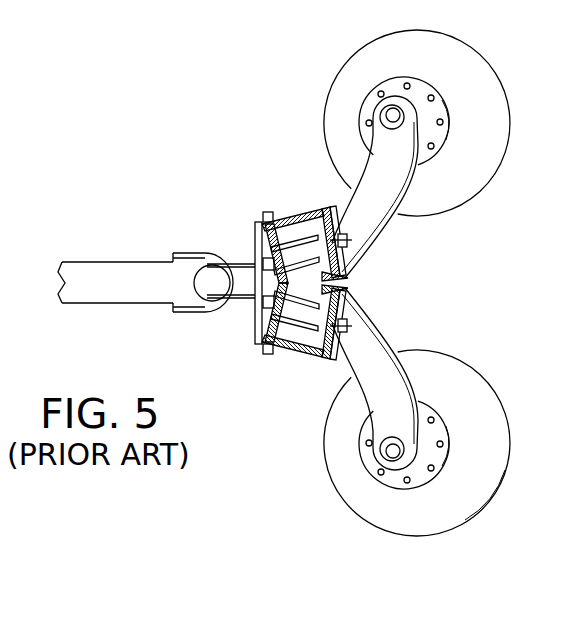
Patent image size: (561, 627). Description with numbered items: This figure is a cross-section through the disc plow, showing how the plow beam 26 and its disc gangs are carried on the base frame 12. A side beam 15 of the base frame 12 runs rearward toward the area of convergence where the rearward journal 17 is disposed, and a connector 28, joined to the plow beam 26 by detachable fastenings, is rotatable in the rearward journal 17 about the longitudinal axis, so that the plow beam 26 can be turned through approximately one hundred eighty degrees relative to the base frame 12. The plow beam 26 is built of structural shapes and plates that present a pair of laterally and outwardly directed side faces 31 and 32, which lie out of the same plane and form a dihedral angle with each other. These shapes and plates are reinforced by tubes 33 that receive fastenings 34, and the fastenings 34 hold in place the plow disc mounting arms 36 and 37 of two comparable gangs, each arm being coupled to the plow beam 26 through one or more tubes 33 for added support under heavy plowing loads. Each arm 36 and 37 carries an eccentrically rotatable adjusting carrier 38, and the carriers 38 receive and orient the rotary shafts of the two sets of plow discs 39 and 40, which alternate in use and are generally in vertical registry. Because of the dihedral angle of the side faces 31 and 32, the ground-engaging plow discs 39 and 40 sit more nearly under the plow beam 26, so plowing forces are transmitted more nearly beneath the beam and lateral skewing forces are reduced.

The base frame 12 is at (100, 254).
The side beam 15 is at (129, 308).
The rearward journal 17 is at (198, 250).
The plow beam 26 is at (280, 362).
The connector 28 is at (240, 297).
The side face 31 is at (308, 225).
The side face 32 is at (298, 350).
The tube 33 is at (318, 298).
The fastening 34 is at (337, 238).
The plow disc mounting arm 36 is at (406, 200).
The plow disc mounting arm 37 is at (383, 340).
The adjusting carrier 38 is at (437, 103).
The plow disc 39 is at (500, 103).
The plow disc 40 is at (342, 478).